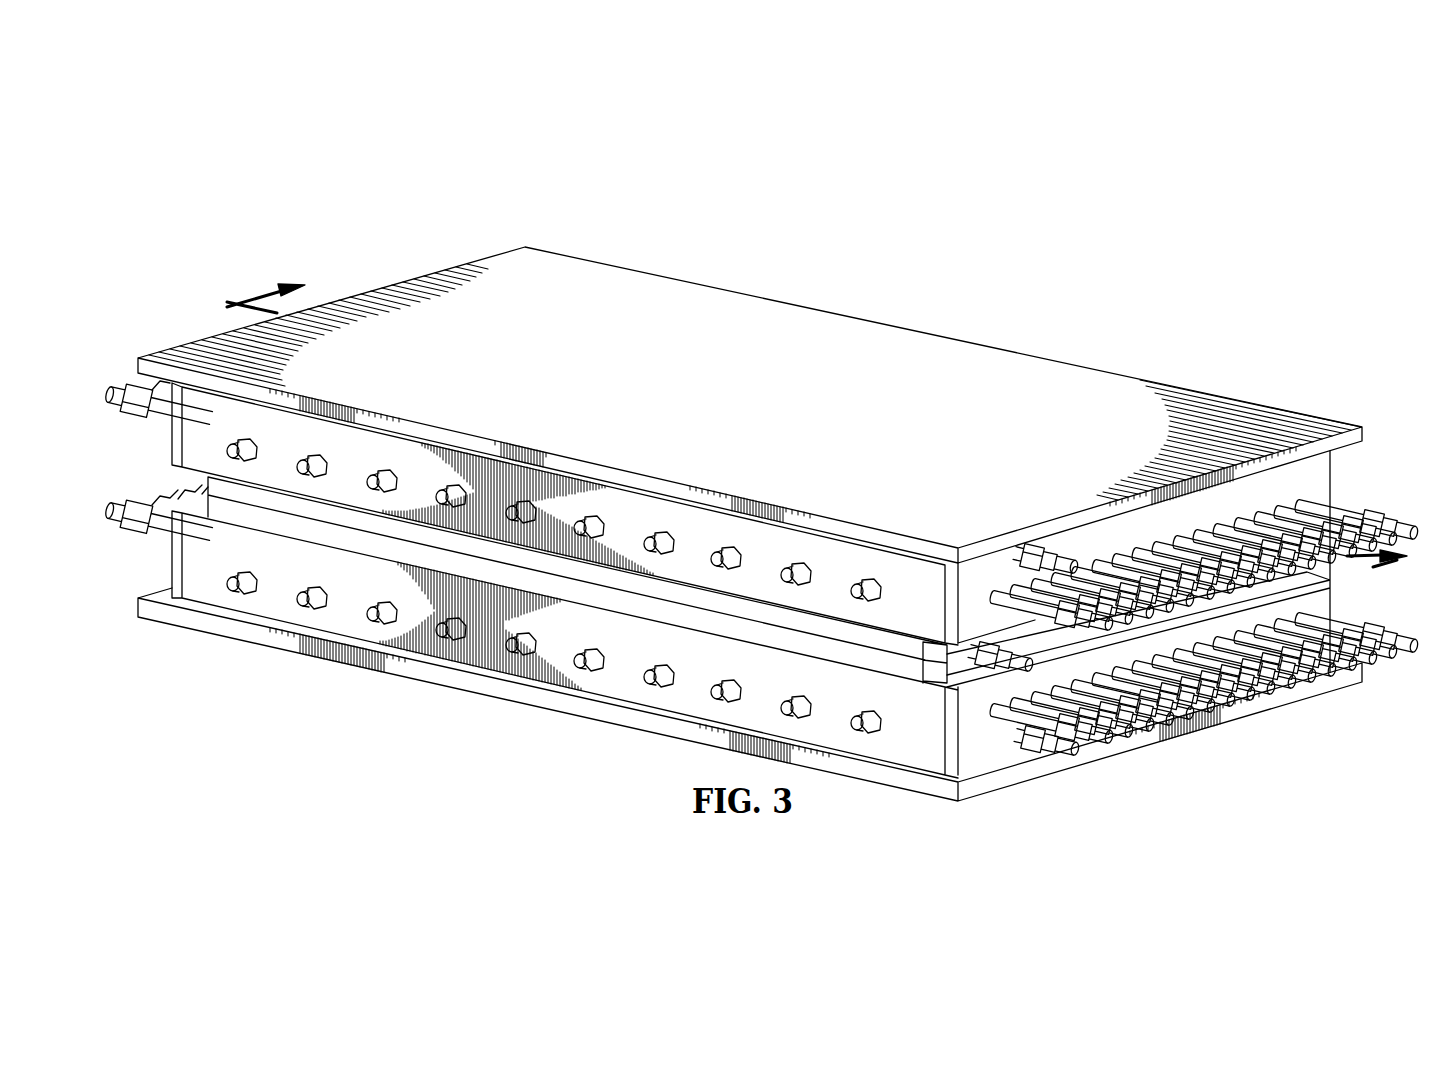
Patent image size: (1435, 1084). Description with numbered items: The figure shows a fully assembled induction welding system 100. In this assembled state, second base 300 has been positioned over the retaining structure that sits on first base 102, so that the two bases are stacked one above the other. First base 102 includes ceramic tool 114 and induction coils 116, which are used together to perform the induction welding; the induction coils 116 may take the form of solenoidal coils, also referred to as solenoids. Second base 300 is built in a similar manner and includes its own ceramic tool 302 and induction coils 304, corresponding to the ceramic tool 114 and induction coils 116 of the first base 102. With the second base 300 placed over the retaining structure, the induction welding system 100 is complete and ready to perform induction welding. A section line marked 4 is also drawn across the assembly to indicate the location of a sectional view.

The induction welding system 100 is at (932, 252).
The first base 102 is at (496, 700).
The ceramic tool 114 is at (614, 683).
The induction coils 116 is at (1313, 621).
The second base 300 is at (943, 337).
The ceramic tool 302 is at (203, 435).
The induction coils 304 is at (1313, 503).
The section line 4- 4 is at (829, 411).